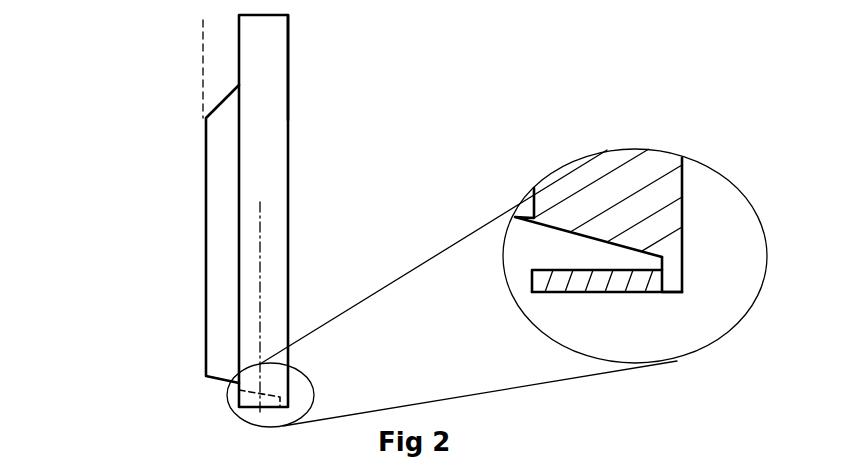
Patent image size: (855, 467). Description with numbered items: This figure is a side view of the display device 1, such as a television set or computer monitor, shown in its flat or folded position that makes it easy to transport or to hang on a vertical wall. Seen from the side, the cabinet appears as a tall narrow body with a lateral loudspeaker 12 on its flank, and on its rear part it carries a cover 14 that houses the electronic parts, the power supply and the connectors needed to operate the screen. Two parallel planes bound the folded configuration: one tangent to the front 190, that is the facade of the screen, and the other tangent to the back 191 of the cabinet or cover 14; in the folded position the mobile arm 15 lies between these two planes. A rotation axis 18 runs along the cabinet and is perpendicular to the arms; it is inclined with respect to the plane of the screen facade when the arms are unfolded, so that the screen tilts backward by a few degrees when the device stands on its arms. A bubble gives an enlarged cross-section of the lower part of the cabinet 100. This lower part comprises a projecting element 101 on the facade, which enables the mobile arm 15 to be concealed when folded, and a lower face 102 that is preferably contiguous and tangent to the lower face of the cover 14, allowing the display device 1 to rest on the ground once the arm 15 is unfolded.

The display device 1 is at (178, 53).
The lateral loudspeaker 12 is at (270, 105).
The cover 14 is at (212, 222).
The rotation axis 18 is at (260, 232).
The front 190 is at (290, 8).
The back 191 is at (203, 76).
The lower part of the cabinet 100 is at (582, 172).
The projecting element 101 is at (668, 283).
The lower face 102 is at (617, 228).
The mobile arm 15 is at (643, 280).